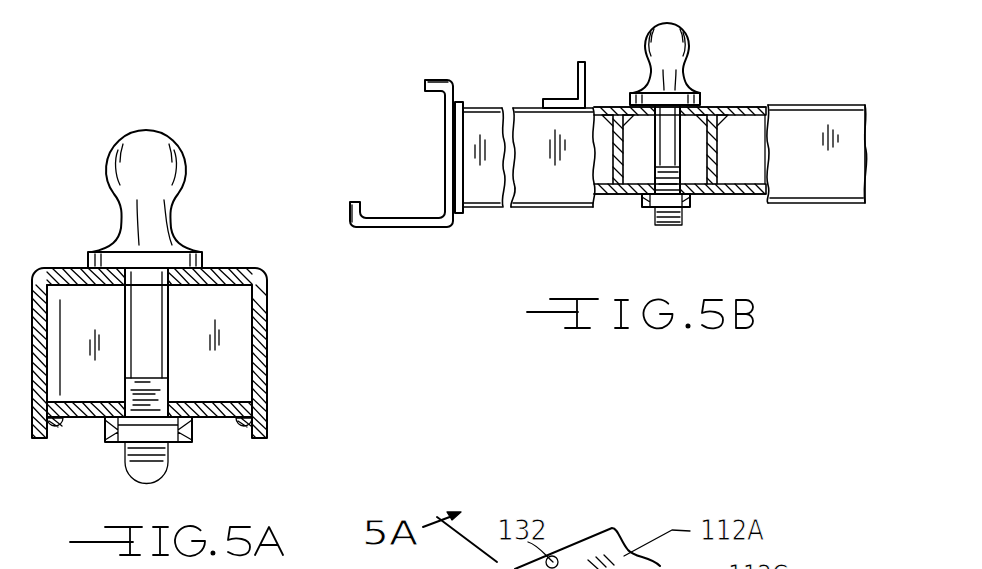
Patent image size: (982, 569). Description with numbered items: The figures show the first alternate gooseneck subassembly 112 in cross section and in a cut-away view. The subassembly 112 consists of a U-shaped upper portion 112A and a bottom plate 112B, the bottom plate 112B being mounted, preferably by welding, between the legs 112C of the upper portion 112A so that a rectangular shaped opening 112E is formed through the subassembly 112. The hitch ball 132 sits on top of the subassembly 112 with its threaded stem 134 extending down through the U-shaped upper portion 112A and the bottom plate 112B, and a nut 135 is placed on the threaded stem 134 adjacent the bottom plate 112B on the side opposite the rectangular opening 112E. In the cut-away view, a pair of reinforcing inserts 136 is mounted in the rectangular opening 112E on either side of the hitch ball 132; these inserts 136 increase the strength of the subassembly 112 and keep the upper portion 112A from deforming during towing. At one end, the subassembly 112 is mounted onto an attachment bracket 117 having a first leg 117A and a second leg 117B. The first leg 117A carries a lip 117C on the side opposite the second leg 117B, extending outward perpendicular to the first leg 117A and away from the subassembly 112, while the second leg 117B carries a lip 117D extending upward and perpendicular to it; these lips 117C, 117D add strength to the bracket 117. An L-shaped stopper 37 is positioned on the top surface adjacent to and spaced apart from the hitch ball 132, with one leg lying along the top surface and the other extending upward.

In FIG. 5B, the stopper 37 is at (572, 80).
In FIG. 5A, the first alternate gooseneck subassembly 112 is at (82, 268).
In FIG. 5B, the first alternate gooseneck subassembly 112 is at (805, 118).
In FIG. 5A, the U-shaped upper portion 112A is at (233, 270).
In FIG. 5B, the U-shaped upper portion 112A is at (750, 107).
In FIG. 5A, the bottom plate 112B is at (204, 420).
In FIG. 5B, the bottom plate 112B is at (752, 194).
In FIG. 5A, the legs of the upper portion 112C is at (267, 381).
In FIG. 5B, the legs of the upper portion 112C is at (848, 187).
In FIG. 5A, the rectangular shaped opening 112E is at (93, 376).
In FIG. 5B, the attachment bracket 117 is at (442, 92).
In FIG. 5B, the first leg of attachment bracket 117A is at (448, 142).
In FIG. 5B, the second leg of attachment bracket 117B is at (398, 232).
In FIG. 5B, the lip of first leg 117C is at (432, 75).
In FIG. 5B, the lip of second leg 117D is at (352, 228).
In FIG. 5A, the hitch ball 132 is at (132, 154).
In FIG. 5B, the hitch ball 132 is at (656, 48).
In FIG. 5A, the threaded stem 134 is at (135, 317).
In FIG. 5B, the threaded stem 134 is at (670, 140).
In FIG. 5A, the nut 135 is at (158, 428).
In FIG. 5B, the nut 135 is at (644, 197).
In FIG. 5B, the reinforcing inserts 136 is at (720, 194).